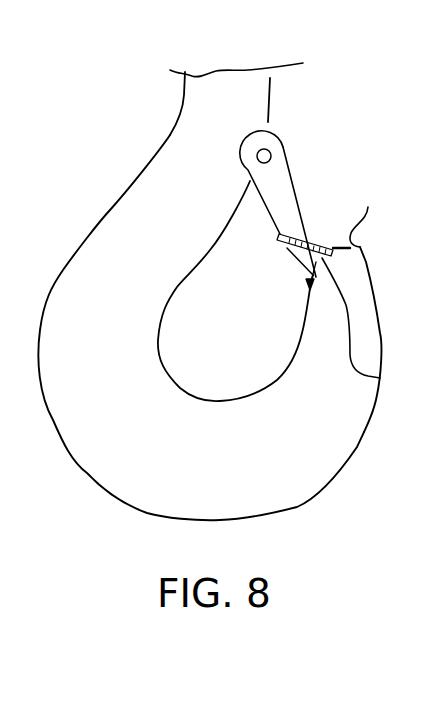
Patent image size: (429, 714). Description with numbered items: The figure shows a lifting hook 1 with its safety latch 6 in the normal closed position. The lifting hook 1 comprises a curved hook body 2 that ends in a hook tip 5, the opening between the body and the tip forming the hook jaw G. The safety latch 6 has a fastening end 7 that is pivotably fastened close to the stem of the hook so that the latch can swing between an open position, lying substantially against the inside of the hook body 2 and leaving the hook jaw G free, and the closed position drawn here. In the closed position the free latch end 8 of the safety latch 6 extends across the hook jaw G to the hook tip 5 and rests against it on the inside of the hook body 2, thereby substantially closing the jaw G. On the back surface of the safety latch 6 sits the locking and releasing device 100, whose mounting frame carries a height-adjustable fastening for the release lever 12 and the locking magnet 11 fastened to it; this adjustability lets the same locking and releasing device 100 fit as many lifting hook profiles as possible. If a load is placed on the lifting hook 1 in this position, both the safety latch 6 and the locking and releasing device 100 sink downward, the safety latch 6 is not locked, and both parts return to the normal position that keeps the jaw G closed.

The lifting hook 1 is at (137, 133).
The hook body 2 is at (93, 255).
The hook tip 5 is at (356, 208).
The safety latch 6 is at (298, 187).
The fastening end 7 is at (277, 145).
The latch end 8 is at (380, 378).
The locking magnet 11 is at (280, 242).
The release lever 12 is at (318, 240).
The locking and releasing device 100 is at (290, 258).
The hook jaw G is at (234, 300).